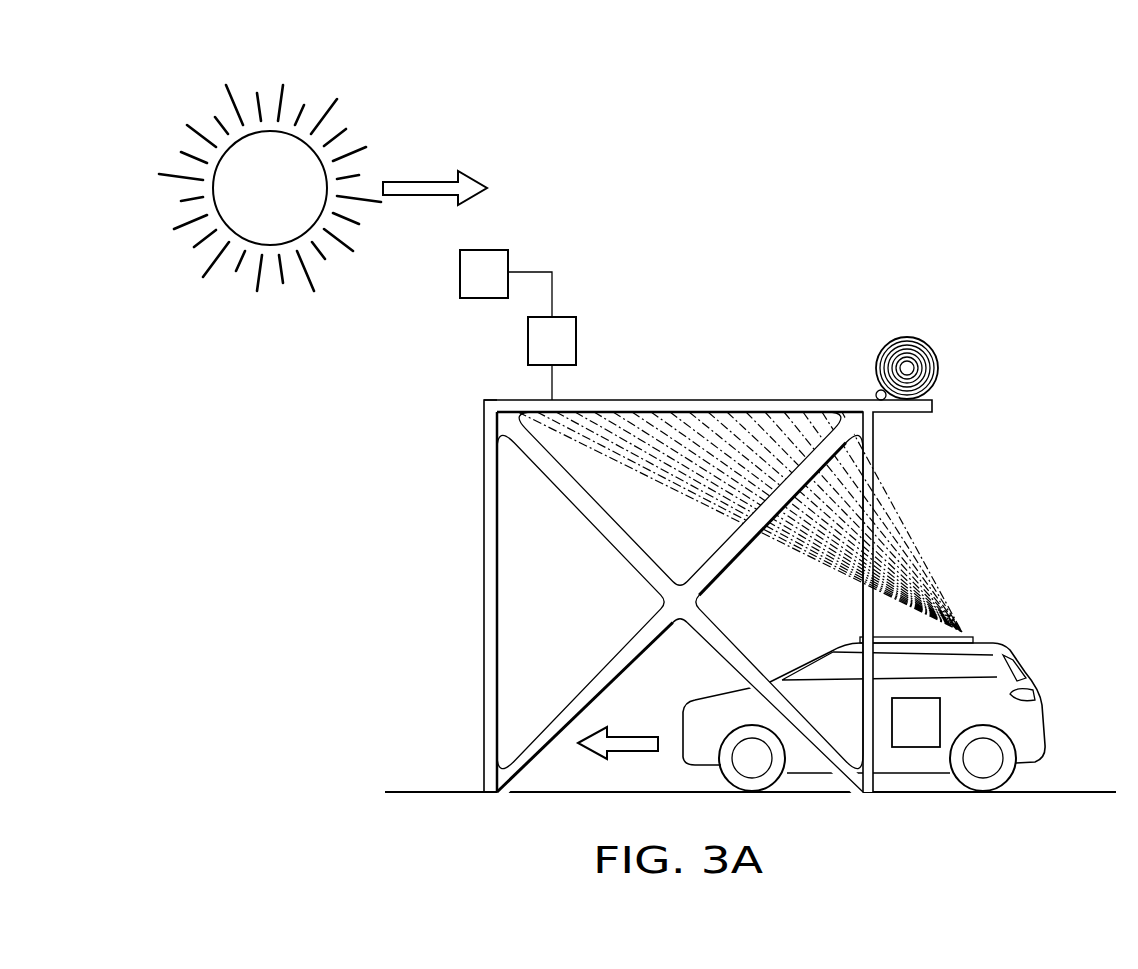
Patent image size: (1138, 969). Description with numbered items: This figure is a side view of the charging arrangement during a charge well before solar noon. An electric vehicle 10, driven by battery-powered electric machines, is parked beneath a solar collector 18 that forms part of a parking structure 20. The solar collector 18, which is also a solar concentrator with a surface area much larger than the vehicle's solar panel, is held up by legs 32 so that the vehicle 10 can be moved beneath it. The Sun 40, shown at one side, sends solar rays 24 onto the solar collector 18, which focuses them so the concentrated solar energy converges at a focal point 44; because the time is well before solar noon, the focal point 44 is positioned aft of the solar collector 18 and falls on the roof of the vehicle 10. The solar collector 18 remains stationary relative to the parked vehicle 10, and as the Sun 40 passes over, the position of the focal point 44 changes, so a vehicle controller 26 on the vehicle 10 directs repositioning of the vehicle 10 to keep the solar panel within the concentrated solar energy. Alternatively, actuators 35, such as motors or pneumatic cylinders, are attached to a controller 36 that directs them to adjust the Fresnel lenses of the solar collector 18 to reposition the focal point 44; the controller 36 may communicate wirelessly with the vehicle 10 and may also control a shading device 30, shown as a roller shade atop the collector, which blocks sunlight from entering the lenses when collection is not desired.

The electric vehicle 10 is at (899, 716).
The solar collector 18 is at (718, 400).
The parking structure 20 is at (714, 539).
The solar rays 24 is at (932, 548).
The vehicle controller 26 is at (916, 748).
The shading device 30 is at (940, 372).
The legs 32 is at (484, 572).
The actuators 35 is at (577, 340).
The controller 36 is at (460, 272).
The Sun 40 is at (215, 100).
The focal point 44 is at (985, 630).